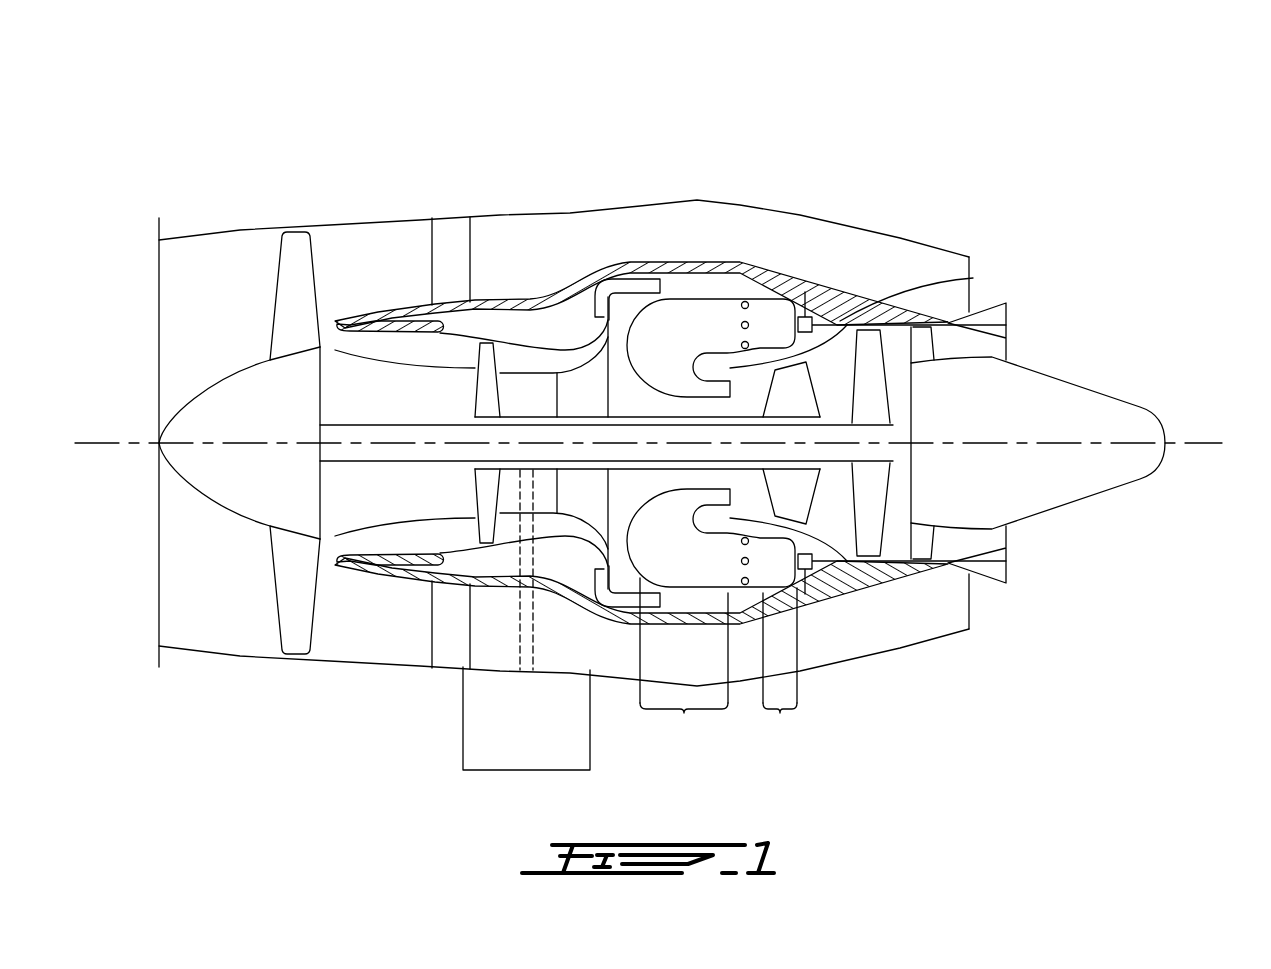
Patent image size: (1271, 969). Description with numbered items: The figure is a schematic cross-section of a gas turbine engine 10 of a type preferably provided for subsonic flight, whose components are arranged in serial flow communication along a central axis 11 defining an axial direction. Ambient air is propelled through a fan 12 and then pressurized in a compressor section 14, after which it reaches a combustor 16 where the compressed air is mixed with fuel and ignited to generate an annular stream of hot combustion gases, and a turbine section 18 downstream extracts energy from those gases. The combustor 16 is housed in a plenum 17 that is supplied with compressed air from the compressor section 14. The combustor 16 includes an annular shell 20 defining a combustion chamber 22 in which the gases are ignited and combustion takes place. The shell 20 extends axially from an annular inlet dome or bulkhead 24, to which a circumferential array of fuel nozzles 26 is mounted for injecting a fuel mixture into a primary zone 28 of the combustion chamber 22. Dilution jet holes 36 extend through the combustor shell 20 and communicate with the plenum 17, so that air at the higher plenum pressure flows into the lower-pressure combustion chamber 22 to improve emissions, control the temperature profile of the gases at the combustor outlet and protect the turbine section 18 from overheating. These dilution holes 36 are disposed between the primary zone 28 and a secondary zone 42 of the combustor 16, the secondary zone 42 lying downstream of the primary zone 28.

The gas turbine engine 10 is at (878, 107).
The central axis 11 is at (1196, 443).
The fan 12 is at (292, 582).
The compressor section 14 is at (543, 357).
The combustor 16 is at (699, 323).
The plenum 17 is at (735, 283).
The turbine section 18 is at (830, 505).
The annular shell 20 is at (740, 590).
The combustion chamber 22 is at (690, 577).
The annular inlet dome or bulkhead 24 is at (804, 292).
The fuel nozzles 26 is at (973, 278).
The primary zone 28 is at (918, 587).
The dilution jet holes 36 is at (748, 303).
The secondary zone 42 is at (684, 665).